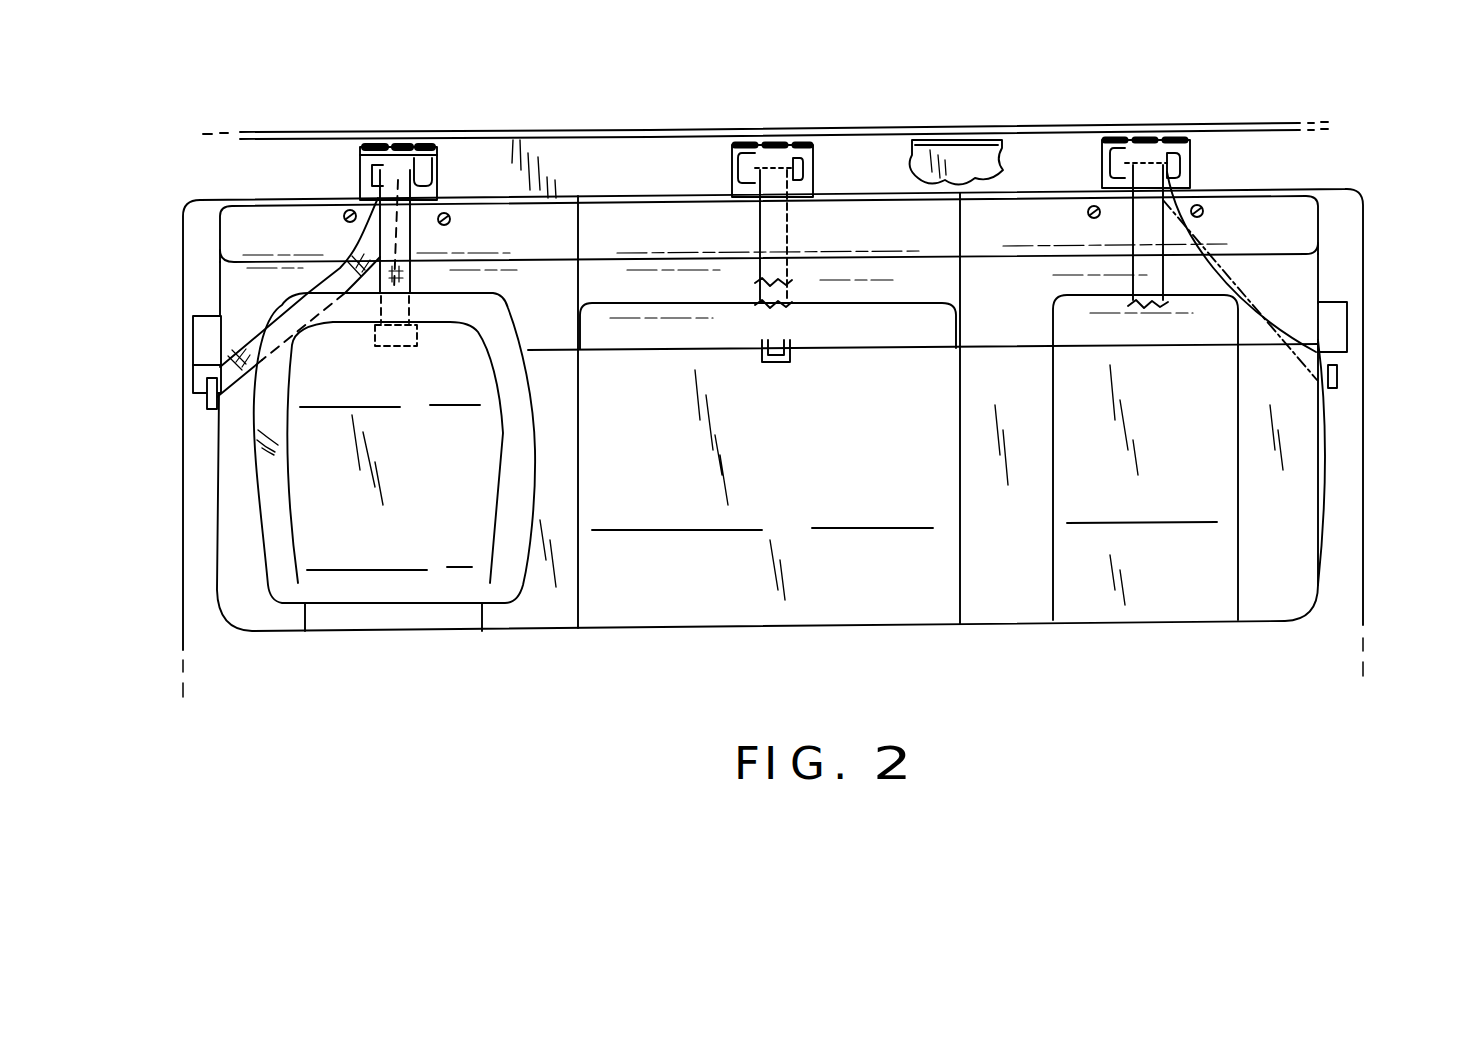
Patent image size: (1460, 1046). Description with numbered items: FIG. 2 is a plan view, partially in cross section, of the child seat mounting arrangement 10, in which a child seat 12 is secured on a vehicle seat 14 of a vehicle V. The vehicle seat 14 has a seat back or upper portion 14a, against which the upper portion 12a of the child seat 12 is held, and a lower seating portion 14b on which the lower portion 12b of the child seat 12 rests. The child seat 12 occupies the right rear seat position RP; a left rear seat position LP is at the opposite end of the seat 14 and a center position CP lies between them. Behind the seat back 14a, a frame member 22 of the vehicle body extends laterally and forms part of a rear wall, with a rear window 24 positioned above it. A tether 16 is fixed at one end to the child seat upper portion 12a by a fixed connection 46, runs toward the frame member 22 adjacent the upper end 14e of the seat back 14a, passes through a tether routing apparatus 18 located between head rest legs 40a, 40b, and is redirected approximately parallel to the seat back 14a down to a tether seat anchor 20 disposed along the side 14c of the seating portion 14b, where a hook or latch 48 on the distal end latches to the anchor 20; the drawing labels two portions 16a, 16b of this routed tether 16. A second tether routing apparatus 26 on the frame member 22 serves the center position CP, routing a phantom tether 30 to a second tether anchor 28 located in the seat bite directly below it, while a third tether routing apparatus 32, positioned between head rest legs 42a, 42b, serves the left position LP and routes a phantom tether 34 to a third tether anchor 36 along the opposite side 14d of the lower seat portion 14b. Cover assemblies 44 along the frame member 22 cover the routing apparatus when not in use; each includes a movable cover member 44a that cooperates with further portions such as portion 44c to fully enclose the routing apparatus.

The child seat mounting arrangement 10 is at (350, 733).
The child seat 12 is at (377, 602).
The upper portion of the child seat 12a is at (502, 306).
The lower portion of the child seat 12b is at (520, 565).
The vehicle seat 14 is at (545, 633).
The seat back 14a is at (558, 313).
The seating portion 14b is at (613, 600).
The side of the seating portion 14c is at (215, 522).
The opposite side of the lower seat portion 14d is at (1332, 452).
The upper end of the seat back 14e is at (627, 222).
The tether 16 is at (352, 238).
The lap belt portion 16a is at (250, 327).
The shoulder belt portion 16b is at (403, 243).
The tether routing apparatus 18 is at (441, 170).
The tether seat anchor 20 is at (207, 377).
The frame member 22 is at (955, 165).
The rear window 24 is at (1033, 133).
The second tether routing apparatus 26 is at (815, 160).
The second tether anchor 28 is at (782, 367).
The tether 30 is at (778, 246).
The third tether routing apparatus 32 is at (1187, 162).
The tether 34 is at (1265, 312).
The third tether anchor 36 is at (1338, 374).
The head rest leg 40a is at (349, 210).
The head rest leg 40b is at (451, 221).
The head rest leg 42a is at (1088, 214).
The head rest leg 42b is at (1203, 212).
The cover assembly 44 is at (402, 147).
The movable cover member 44a is at (384, 146).
The cover portion 44c is at (448, 140).
The fixed connection 46 is at (393, 346).
The hook or latch 48 is at (212, 420).
The right rear seat position RP is at (412, 618).
The center seating position CP is at (778, 598).
The left rear seat position LP is at (1150, 606).
The vehicle V is at (1366, 532).